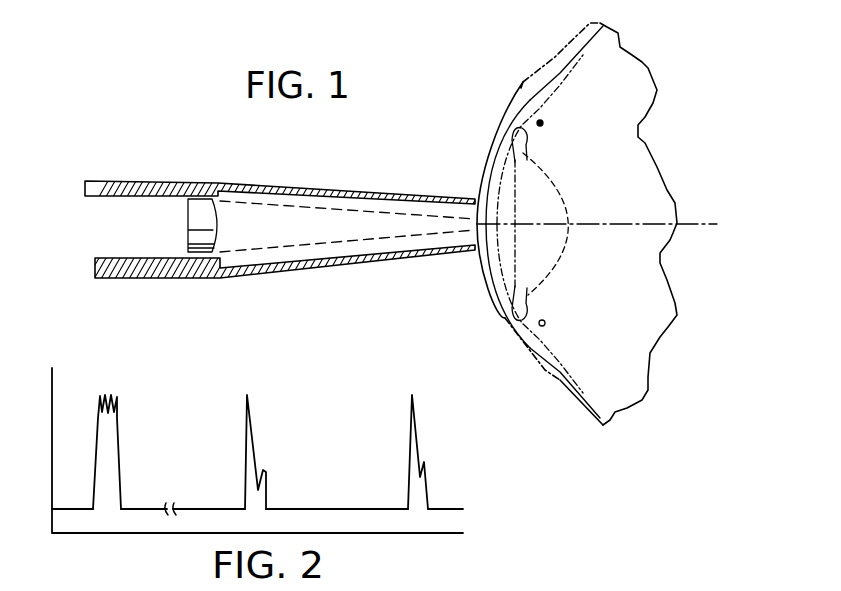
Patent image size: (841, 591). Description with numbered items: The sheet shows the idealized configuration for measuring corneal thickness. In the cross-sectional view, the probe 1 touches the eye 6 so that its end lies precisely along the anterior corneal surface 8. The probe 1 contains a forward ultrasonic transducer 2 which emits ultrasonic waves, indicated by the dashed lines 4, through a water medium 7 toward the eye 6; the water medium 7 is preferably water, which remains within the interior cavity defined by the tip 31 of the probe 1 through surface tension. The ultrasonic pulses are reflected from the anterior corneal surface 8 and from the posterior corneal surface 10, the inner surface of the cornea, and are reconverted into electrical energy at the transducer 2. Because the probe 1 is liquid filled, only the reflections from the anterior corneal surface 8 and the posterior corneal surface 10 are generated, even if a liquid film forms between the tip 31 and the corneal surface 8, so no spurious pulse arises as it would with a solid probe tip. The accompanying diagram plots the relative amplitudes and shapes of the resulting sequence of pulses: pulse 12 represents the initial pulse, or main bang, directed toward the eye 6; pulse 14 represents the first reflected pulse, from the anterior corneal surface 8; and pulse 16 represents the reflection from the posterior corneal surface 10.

In FIG. 1, the probe 1 is at (162, 181).
In FIG. 1, the forward ultrasonic transducer 2 is at (203, 208).
In FIG. 1, the dashed lines 4 is at (345, 218).
In FIG. 1, the eye 6 is at (622, 128).
In FIG. 1, the water medium 7 is at (297, 220).
In FIG. 1, the anterior corneal surface 8 is at (487, 158).
In FIG. 1, the posterior corneal surface 10 is at (482, 266).
In FIG. 1, the tip 31 is at (468, 256).
In FIG. 2, the pulse 12 is at (110, 470).
In FIG. 2, the pulse 14 is at (267, 470).
In FIG. 2, the pulse 16 is at (416, 437).